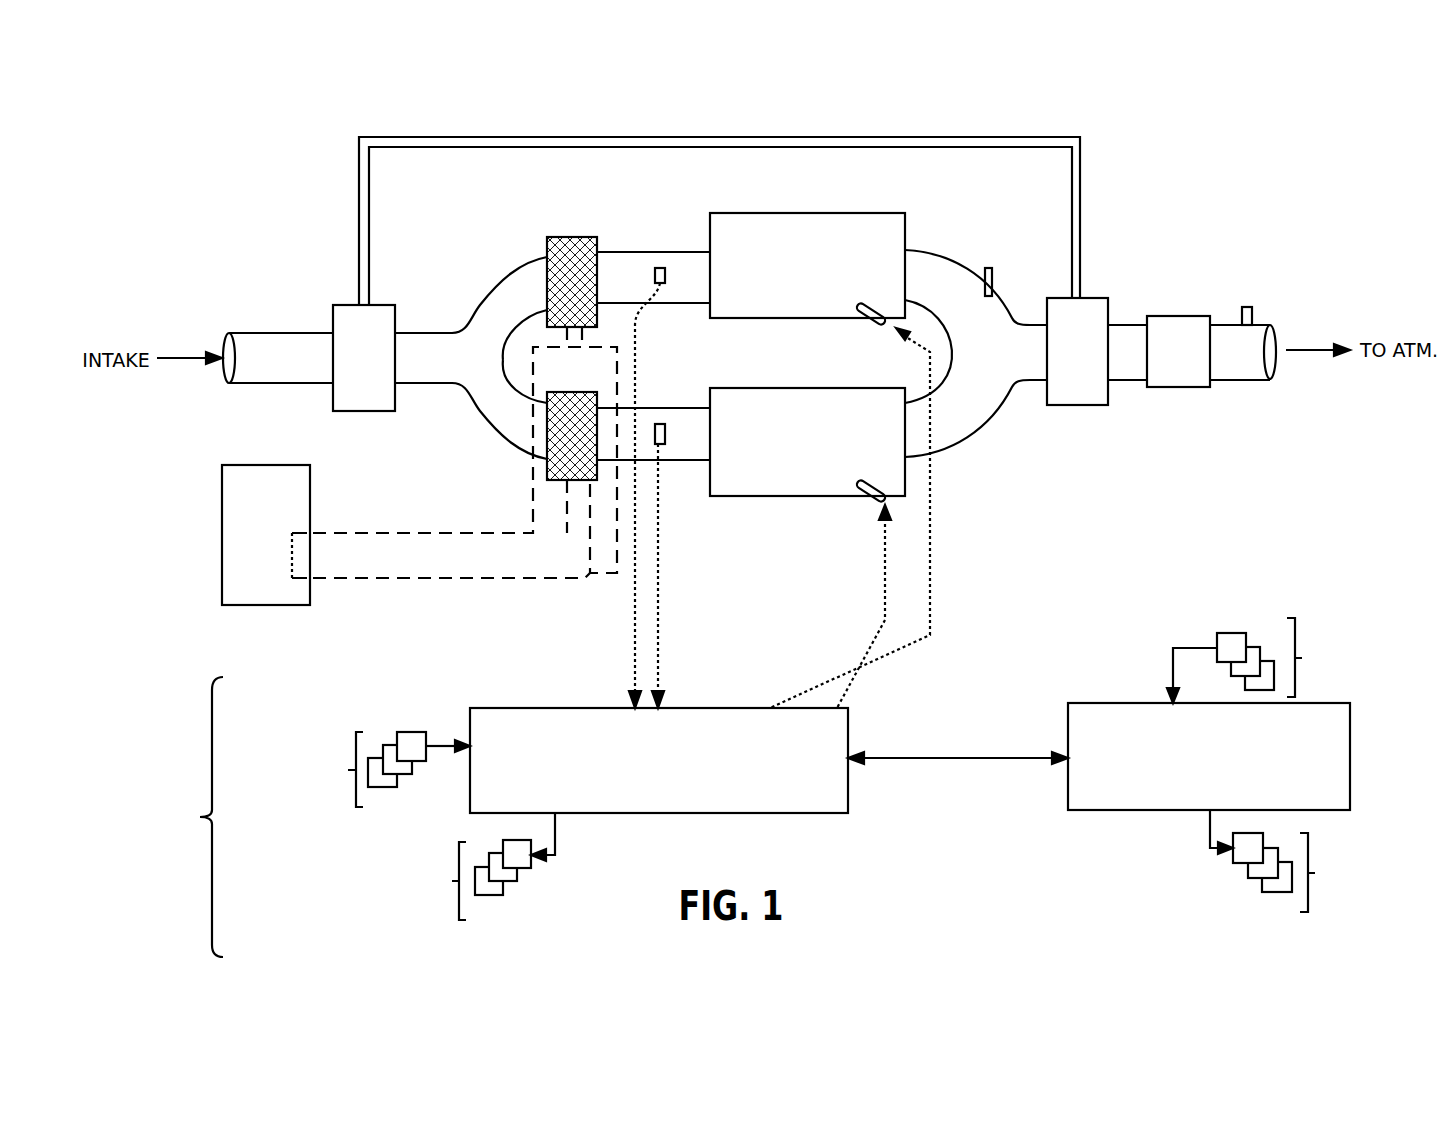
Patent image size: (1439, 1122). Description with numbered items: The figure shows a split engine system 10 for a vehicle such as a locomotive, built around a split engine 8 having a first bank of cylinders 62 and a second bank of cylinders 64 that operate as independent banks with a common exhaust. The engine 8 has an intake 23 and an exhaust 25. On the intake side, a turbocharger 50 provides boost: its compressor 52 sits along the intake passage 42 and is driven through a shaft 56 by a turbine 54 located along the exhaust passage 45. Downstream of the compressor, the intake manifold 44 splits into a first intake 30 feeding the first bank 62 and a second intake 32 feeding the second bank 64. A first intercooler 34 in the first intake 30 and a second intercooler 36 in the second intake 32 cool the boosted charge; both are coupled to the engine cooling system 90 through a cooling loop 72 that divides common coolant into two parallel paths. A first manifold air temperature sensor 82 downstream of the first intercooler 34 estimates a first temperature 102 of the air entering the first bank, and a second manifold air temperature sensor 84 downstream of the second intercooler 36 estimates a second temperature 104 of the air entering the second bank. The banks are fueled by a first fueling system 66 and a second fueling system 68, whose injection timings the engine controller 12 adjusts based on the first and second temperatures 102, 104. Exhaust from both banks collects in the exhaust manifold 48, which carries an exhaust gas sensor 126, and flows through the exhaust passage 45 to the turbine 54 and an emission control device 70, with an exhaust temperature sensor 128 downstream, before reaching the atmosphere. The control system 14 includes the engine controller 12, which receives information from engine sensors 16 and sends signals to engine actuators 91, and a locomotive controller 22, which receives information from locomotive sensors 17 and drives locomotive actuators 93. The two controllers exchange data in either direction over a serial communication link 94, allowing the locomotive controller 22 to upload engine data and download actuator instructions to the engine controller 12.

The split engine system 10 is at (1304, 112).
The split engine 8 is at (848, 184).
The intake 23 is at (318, 208).
The exhaust 25 is at (1147, 470).
The intake passage 42 is at (265, 333).
The compressor 52 is at (352, 369).
The shaft 56 is at (690, 134).
The turbocharger 50 is at (572, 116).
The intake manifold 44 is at (475, 364).
The first intercooler 34 is at (552, 237).
The second intercooler 36 is at (552, 392).
The first intake 30 is at (642, 252).
The second intake 32 is at (642, 408).
The first manifold air temperature sensor 82 is at (665, 290).
The second manifold air temperature sensor 84 is at (665, 447).
The first temperature 102 is at (613, 655).
The second temperature 104 is at (685, 655).
The first bank of cylinders 62 is at (796, 276).
The second bank of cylinders 64 is at (796, 451).
The first fueling system 66 is at (860, 304).
The second fueling system 68 is at (860, 481).
The exhaust manifold 48 is at (978, 364).
The exhaust gas sensor 126 is at (990, 270).
The turbine 54 is at (1066, 364).
The exhaust passage 45 is at (1122, 325).
The emission control device 70 is at (1166, 364).
The exhaust temperature sensor 128 is at (1250, 307).
The engine cooling system 90 is at (253, 547).
The cooling loop 72 is at (410, 532).
The control system 14 is at (175, 817).
The engine controller 12 is at (781, 771).
The engine sensors 16 is at (373, 769).
The engine actuators 91 is at (461, 866).
The serial communication link 94 is at (938, 758).
The locomotive controller 22 is at (1296, 781).
The locomotive sensors 17 is at (1269, 660).
The locomotive actuators 93 is at (1304, 861).